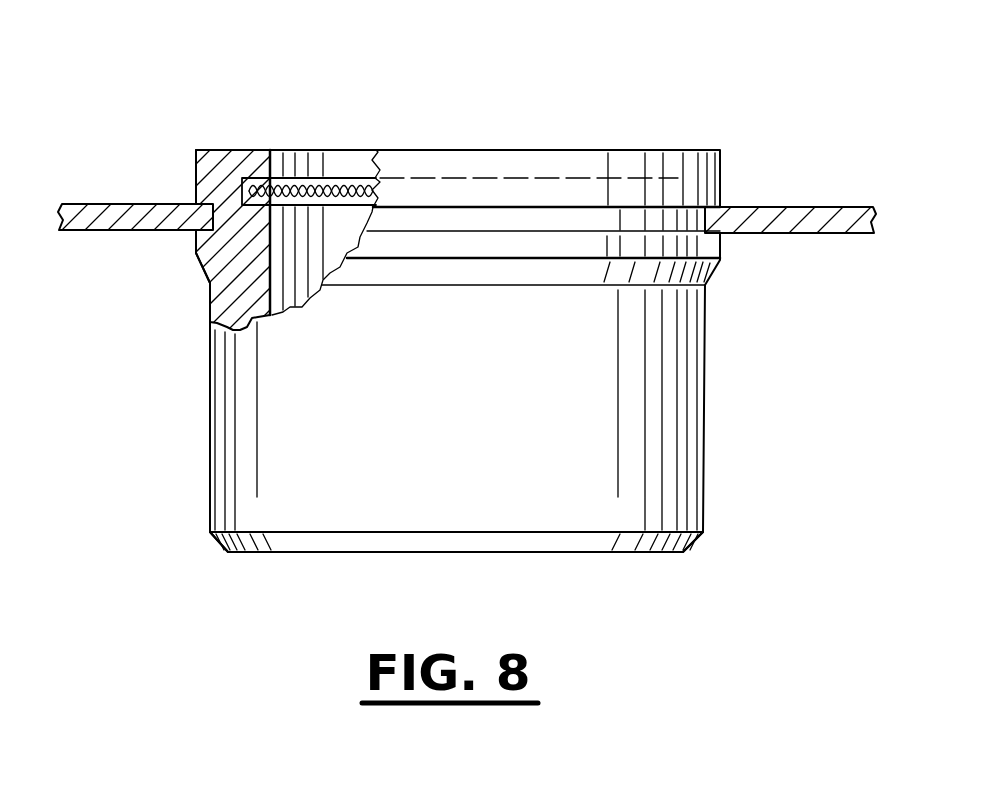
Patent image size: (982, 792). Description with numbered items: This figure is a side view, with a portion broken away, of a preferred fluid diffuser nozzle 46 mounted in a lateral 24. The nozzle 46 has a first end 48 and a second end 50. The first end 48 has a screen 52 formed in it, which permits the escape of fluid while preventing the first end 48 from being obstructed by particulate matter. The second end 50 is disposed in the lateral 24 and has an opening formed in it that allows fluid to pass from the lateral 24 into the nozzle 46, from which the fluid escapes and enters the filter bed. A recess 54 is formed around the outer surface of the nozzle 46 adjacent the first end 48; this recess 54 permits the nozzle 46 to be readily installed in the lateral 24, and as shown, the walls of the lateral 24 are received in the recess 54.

The lateral 24 is at (791, 190).
The fluid diffuser nozzle 46 is at (318, 105).
The first end 48 is at (233, 148).
The second end 50 is at (257, 545).
The screen 52 is at (357, 178).
The recess 54 is at (577, 220).